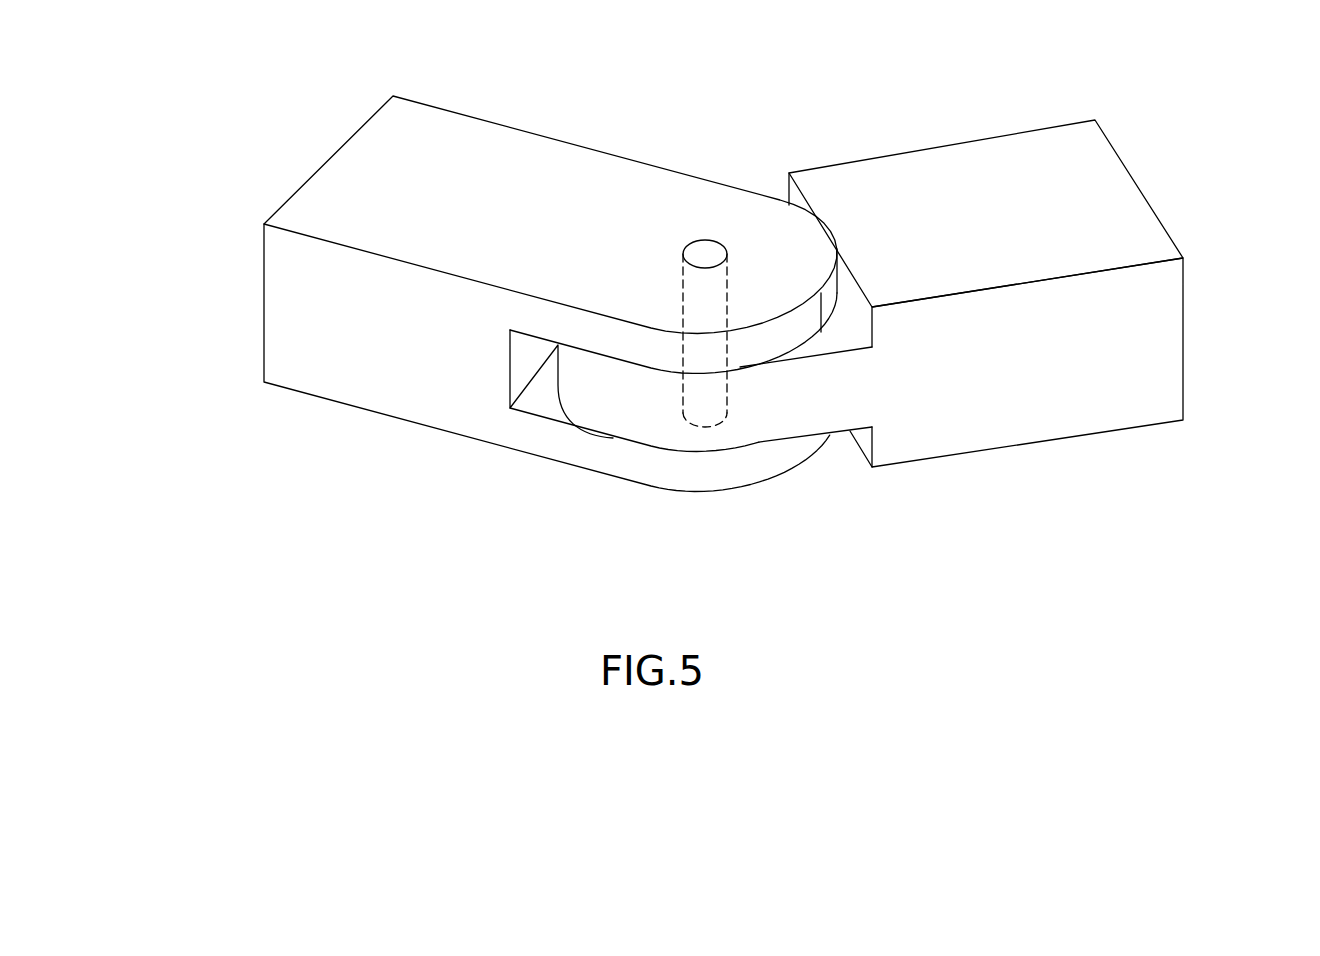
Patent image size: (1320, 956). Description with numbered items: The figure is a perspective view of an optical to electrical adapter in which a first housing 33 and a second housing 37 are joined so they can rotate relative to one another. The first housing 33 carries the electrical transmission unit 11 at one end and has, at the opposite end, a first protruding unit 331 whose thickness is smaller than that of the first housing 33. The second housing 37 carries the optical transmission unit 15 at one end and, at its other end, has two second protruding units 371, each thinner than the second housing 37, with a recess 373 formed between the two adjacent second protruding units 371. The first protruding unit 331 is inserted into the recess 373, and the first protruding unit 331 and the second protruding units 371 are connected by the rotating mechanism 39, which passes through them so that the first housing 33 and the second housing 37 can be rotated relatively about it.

The electrical transmission unit 11 is at (1156, 157).
The optical transmission unit 15 is at (256, 174).
The first housing 33 is at (962, 157).
The first protruding unit 331 is at (793, 427).
The second housing 37 is at (553, 152).
The second protruding unit 371 is at (662, 350).
The recess 373 is at (553, 403).
The rotating mechanism 39 is at (715, 247).